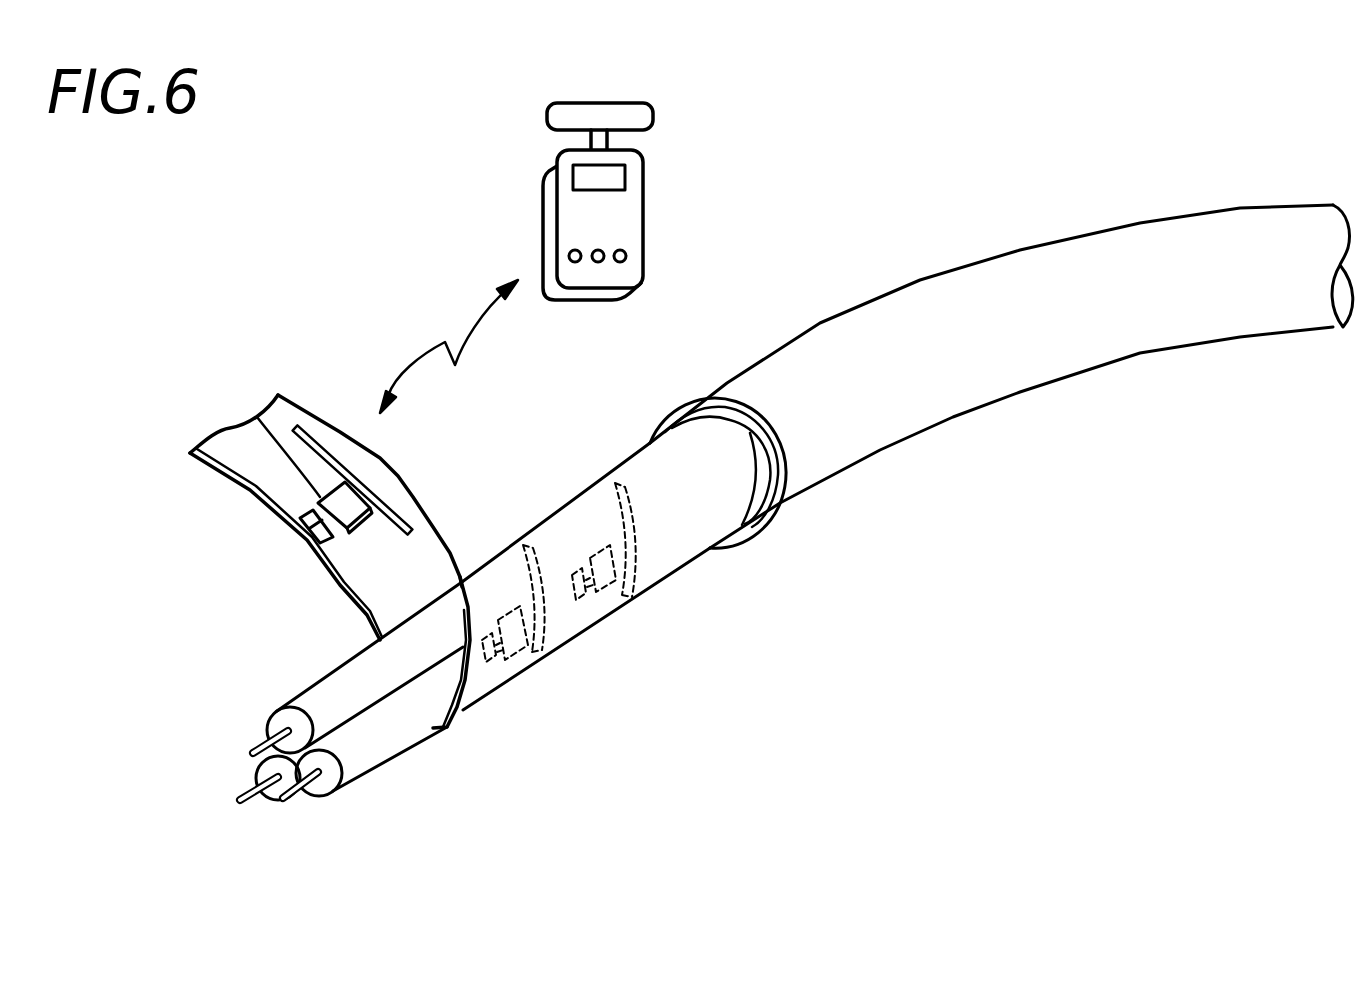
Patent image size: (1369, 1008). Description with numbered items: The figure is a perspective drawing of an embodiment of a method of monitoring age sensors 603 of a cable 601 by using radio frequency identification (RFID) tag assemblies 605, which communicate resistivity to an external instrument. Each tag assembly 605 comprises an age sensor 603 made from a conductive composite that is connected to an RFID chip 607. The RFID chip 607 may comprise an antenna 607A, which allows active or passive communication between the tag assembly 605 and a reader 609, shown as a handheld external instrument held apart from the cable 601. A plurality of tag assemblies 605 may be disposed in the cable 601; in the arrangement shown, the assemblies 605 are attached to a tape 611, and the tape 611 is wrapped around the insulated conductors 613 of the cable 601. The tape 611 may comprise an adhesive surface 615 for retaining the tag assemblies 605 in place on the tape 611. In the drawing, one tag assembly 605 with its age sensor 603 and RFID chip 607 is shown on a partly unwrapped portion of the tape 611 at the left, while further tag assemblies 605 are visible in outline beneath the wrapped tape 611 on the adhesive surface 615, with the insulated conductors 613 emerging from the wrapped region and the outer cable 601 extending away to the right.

The cable 601 is at (1060, 380).
The age sensor 603 is at (302, 526).
The RFID tag assembly 605 is at (318, 487).
The RFID chip 607 is at (346, 508).
The antenna 607A is at (410, 490).
The reader 609 is at (643, 228).
The tape 611 is at (300, 400).
The insulated conductors 613 is at (363, 777).
The adhesive surface 615 is at (438, 561).